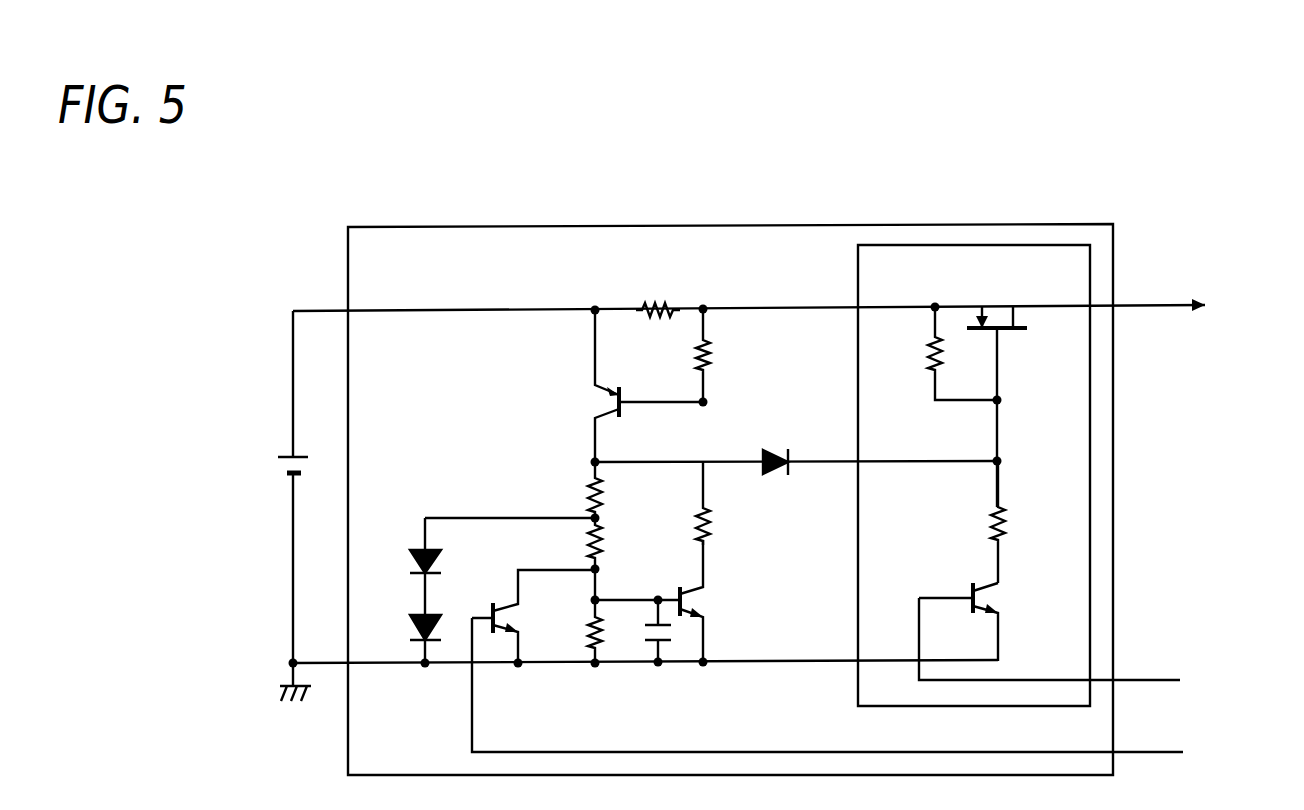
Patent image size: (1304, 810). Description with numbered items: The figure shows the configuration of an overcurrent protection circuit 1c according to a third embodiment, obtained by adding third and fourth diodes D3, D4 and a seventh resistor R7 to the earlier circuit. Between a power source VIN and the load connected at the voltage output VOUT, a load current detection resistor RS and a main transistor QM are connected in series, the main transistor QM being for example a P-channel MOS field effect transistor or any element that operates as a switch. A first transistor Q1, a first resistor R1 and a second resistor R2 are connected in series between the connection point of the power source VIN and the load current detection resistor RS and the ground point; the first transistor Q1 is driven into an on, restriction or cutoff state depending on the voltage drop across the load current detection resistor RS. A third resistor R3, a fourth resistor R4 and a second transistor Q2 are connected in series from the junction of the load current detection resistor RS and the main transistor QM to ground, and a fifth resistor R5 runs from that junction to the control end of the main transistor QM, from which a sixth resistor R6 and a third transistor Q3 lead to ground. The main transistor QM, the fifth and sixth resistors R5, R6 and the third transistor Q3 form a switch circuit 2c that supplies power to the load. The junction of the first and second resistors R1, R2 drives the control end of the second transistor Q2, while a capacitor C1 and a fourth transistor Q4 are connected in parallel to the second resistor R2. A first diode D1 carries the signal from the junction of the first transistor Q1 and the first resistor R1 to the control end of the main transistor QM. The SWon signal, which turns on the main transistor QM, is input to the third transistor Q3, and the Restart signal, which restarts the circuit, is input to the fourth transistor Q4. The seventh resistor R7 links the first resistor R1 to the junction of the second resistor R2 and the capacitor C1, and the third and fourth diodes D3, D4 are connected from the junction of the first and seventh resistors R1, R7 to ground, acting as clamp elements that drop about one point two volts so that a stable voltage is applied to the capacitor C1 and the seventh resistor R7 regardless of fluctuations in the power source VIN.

The overcurrent protection circuit 1c is at (730, 499).
The switch circuit 2c is at (956, 473).
The load current detection resistor RS is at (658, 288).
The first resistor R1 is at (566, 490).
The second resistor R2 is at (571, 631).
The third resistor R3 is at (680, 355).
The fourth resistor R4 is at (734, 505).
The fifth resistor R5 is at (937, 353).
The sixth resistor R6 is at (1020, 522).
The seventh resistor R7 is at (566, 559).
The first transistor Q1 is at (616, 386).
The second transistor Q2 is at (678, 601).
The third transistor Q3 is at (986, 622).
The fourth transistor Q4 is at (532, 616).
The main transistor QM is at (997, 386).
The first diode D1 is at (778, 440).
The third diode D3 is at (481, 566).
The fourth diode D4 is at (404, 638).
The capacitor C1 is at (641, 631).
The power source VIN is at (257, 487).
The voltage output VOUT is at (1236, 304).
The SWon signal SWon is at (1089, 648).
The Restart signal Restart is at (876, 693).